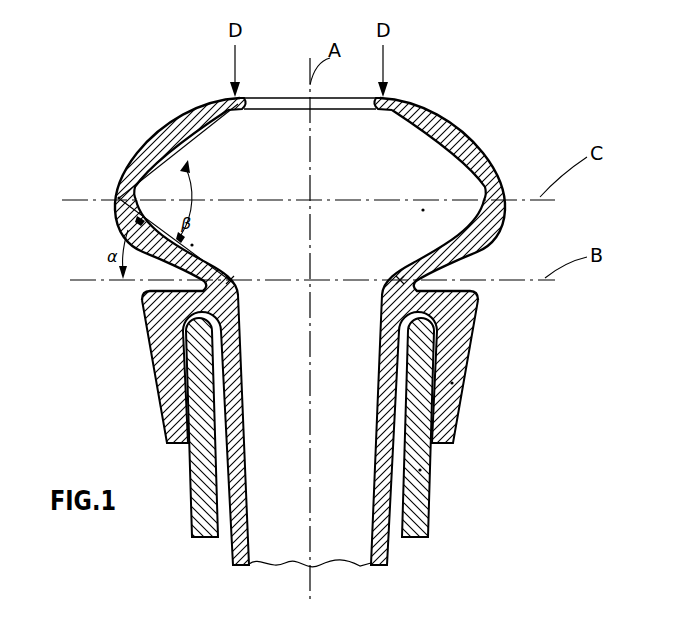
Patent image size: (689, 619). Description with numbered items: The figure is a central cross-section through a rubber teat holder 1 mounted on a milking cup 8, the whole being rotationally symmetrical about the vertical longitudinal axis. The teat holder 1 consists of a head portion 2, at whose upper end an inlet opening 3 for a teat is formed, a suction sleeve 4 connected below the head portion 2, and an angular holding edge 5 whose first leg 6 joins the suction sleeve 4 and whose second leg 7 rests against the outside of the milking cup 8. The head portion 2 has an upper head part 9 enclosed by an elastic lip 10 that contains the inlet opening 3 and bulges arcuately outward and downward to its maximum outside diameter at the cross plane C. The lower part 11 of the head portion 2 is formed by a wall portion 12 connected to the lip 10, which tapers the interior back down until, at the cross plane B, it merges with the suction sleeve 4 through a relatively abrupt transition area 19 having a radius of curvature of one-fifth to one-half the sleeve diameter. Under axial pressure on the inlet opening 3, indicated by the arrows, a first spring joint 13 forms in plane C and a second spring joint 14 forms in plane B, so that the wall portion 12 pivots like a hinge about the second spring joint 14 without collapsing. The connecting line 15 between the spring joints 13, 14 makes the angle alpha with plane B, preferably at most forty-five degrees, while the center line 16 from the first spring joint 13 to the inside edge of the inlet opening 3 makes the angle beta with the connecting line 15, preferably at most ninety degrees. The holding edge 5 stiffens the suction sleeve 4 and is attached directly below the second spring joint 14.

The rubber teat holder 1 is at (456, 117).
The head portion 2 is at (498, 166).
The inlet opening 3 is at (261, 106).
The suction sleeve 4 is at (392, 546).
The holding edge 5 is at (477, 318).
The first leg 6 is at (448, 290).
The second leg 7 is at (453, 384).
The milking cup 8 is at (421, 471).
The upper head part 9 is at (224, 111).
The elastic lip 10 is at (158, 133).
The lower part 11 is at (424, 211).
The wall portion 12 is at (121, 221).
The first spring joint 13 is at (118, 198).
The second spring joint 14 is at (207, 284).
The connecting line 15 is at (193, 245).
The center line 16 is at (193, 138).
The transition area 19 is at (231, 280).